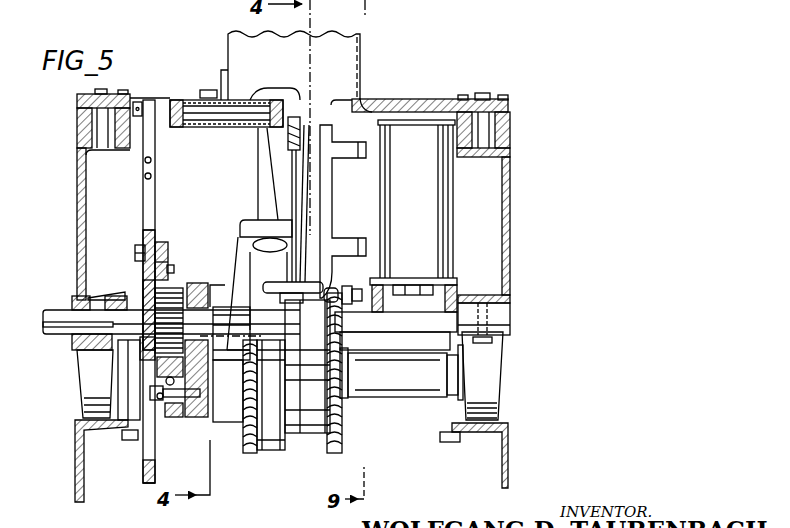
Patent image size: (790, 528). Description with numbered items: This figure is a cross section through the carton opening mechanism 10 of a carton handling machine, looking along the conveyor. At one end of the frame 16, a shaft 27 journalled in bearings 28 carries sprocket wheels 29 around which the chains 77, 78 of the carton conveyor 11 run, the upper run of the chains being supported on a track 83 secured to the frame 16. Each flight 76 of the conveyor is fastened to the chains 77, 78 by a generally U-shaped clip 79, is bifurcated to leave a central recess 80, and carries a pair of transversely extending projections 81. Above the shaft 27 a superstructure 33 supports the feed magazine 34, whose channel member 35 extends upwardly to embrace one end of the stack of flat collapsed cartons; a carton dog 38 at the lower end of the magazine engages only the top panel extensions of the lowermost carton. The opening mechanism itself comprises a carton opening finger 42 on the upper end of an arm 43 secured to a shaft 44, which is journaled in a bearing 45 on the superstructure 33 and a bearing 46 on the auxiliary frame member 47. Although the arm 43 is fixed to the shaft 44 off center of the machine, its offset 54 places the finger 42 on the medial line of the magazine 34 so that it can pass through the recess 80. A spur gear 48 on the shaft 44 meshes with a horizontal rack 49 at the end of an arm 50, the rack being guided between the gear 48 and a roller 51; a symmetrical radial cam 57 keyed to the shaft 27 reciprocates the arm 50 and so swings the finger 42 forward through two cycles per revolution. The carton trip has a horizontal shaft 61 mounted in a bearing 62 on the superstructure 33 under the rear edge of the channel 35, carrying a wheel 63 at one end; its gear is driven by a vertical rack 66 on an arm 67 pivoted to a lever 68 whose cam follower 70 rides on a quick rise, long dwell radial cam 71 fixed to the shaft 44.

The carton opening mechanism 10 is at (72, 238).
The carton conveyor 11 is at (283, 440).
The frame 16 is at (75, 456).
The shaft 27 is at (417, 380).
The bearings 28 is at (85, 402).
The sprocket wheels 29 is at (245, 446).
The superstructure 33 is at (410, 100).
The feed magazine 34 is at (377, 70).
The channel member 35 is at (358, 50).
The carton dog 38 is at (336, 100).
The carton opening finger 42 is at (297, 117).
The arm 43 is at (293, 187).
The shaft 44 is at (66, 330).
The bearing 45 is at (73, 307).
The bearing 46 is at (194, 286).
The auxiliary frame member 47 is at (208, 422).
The spur gear 48 is at (183, 287).
The rack 49 is at (163, 363).
The arm 50 is at (167, 438).
The roller 51 is at (167, 417).
The offset 54 is at (263, 220).
The radial cam 57 is at (132, 483).
The shaft 61 is at (212, 115).
The bearing 62 is at (222, 123).
The wheel 63 is at (282, 100).
The rack 66 is at (148, 146).
The arm 67 is at (150, 207).
The lever 68 is at (160, 245).
The cam follower 70 is at (143, 268).
The radial cam 71 is at (143, 284).
The flight 76 is at (332, 210).
The chain 77 is at (270, 335).
The chain 78 is at (328, 282).
The U-shaped clip 79 is at (267, 281).
The central recess 80 is at (282, 158).
The transversely extending projections 81 is at (342, 152).
The track 83 is at (333, 293).